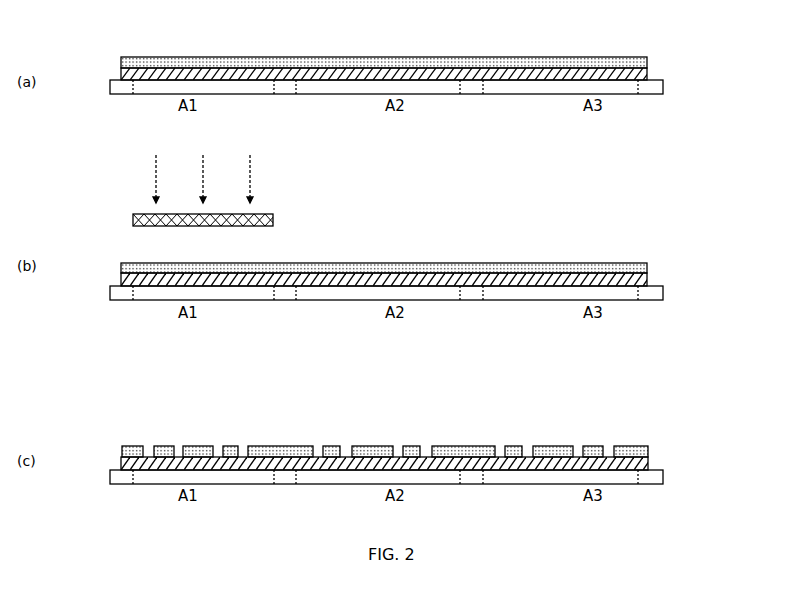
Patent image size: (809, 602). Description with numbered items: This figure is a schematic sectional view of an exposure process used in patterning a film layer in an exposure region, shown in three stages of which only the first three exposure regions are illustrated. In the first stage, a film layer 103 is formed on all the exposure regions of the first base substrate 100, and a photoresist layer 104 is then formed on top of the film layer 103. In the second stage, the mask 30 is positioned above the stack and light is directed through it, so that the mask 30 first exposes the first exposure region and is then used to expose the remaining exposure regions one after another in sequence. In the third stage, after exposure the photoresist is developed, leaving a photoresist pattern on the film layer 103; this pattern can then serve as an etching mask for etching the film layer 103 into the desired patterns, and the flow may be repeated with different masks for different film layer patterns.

The first base substrate 100 is at (663, 82).
The film layer 103 is at (648, 79).
The photoresist layer 104 is at (541, 58).
The mask 30 is at (275, 215).